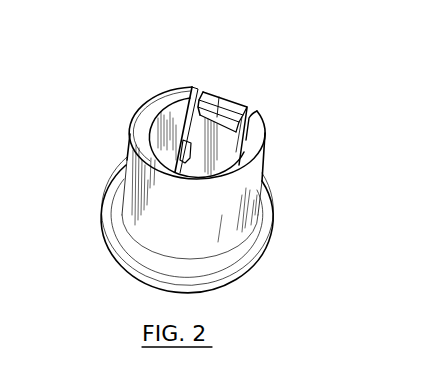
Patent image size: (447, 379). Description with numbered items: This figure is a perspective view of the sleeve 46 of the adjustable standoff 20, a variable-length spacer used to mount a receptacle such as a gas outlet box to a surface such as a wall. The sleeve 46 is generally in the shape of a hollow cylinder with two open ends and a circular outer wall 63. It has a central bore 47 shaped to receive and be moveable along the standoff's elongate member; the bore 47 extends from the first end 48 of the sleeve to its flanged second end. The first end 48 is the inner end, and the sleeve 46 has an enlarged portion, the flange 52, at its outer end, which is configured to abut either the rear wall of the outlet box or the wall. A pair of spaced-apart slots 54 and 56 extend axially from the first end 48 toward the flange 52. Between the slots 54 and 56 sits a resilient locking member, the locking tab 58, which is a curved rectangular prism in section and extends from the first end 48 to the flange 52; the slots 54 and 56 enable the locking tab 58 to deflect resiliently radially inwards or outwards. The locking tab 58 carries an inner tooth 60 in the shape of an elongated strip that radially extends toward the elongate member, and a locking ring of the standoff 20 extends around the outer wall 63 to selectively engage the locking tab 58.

The adjustable standoff 20 is at (256, 45).
The sleeve 46 is at (140, 91).
The central bore 47 is at (168, 152).
The first end 48 is at (172, 100).
The flange 52 is at (123, 263).
The slot 54 is at (198, 91).
The slot 56 is at (258, 115).
The locking tab 58 is at (247, 104).
The inner tooth 60 is at (219, 97).
The circular outer wall 63 is at (210, 228).